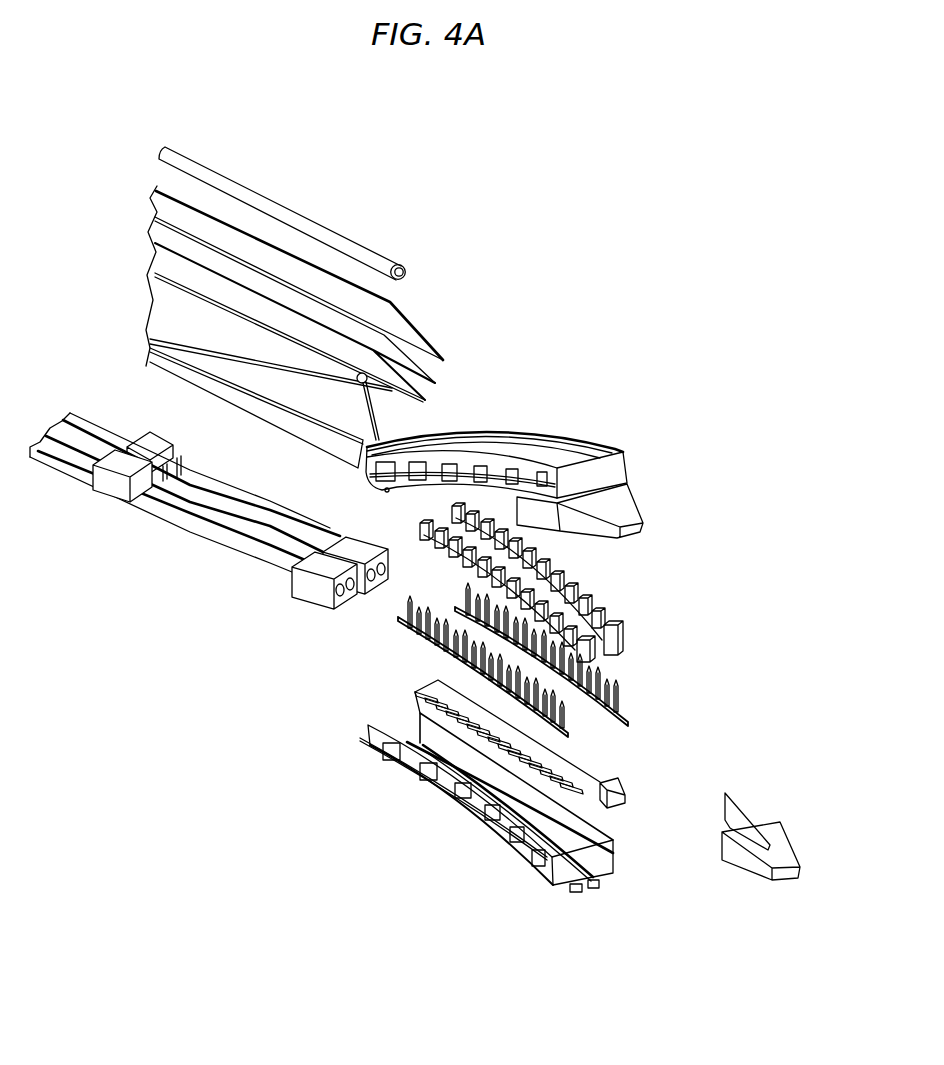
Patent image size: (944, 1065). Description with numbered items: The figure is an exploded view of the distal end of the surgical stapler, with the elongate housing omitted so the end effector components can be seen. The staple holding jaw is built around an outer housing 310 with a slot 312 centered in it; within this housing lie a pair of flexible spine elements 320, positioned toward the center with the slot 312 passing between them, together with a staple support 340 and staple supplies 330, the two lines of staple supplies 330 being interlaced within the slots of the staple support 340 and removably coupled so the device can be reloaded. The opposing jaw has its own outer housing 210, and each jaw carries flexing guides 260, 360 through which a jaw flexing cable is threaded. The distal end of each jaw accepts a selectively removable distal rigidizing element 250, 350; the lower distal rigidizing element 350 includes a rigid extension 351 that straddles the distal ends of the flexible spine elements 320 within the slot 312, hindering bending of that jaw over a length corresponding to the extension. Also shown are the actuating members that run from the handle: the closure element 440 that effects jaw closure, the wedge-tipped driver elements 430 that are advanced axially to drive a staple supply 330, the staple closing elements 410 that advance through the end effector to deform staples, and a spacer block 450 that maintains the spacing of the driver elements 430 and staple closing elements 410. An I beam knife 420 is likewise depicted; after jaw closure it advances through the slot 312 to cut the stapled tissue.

The outer housing 210 is at (610, 445).
The distal rigidizing element 250 is at (620, 510).
The flexing guide 260 is at (430, 460).
The outer housing 310 is at (513, 843).
The slot 312 is at (587, 873).
The flexible spine element 320 is at (587, 815).
The staple supply 330 is at (400, 619).
The staple support 340 is at (607, 623).
The distal rigidizing element 350 is at (785, 863).
The rigid extension 351 is at (742, 807).
The flexing guide 360 is at (453, 800).
The staple closing element 410 is at (283, 518).
The I beam knife 420 is at (330, 405).
The driver element 430 is at (410, 380).
The closure element 440 is at (340, 227).
The spacer block 450 is at (107, 500).